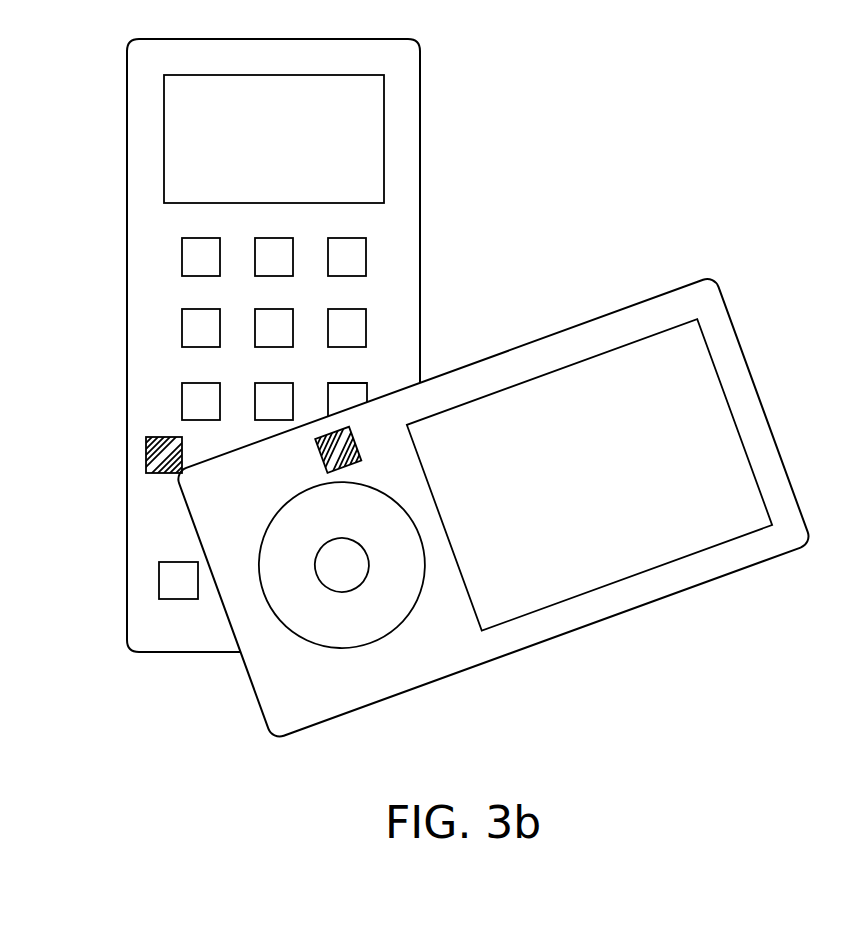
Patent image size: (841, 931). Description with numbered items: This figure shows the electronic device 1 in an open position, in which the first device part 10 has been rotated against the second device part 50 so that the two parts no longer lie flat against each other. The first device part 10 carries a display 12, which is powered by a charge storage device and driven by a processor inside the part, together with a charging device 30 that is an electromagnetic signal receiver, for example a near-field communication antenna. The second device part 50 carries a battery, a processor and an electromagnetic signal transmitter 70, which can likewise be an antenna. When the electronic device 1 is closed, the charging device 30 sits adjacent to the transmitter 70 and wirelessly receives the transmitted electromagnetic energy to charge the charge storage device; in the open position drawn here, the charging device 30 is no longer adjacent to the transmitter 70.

The electronic device 1 is at (600, 148).
The first device part 10 is at (407, 685).
The display 12 is at (592, 377).
The charging device 30 is at (323, 452).
The second device part 50 is at (412, 262).
The electromagnetic signal transmitter 70 is at (146, 455).